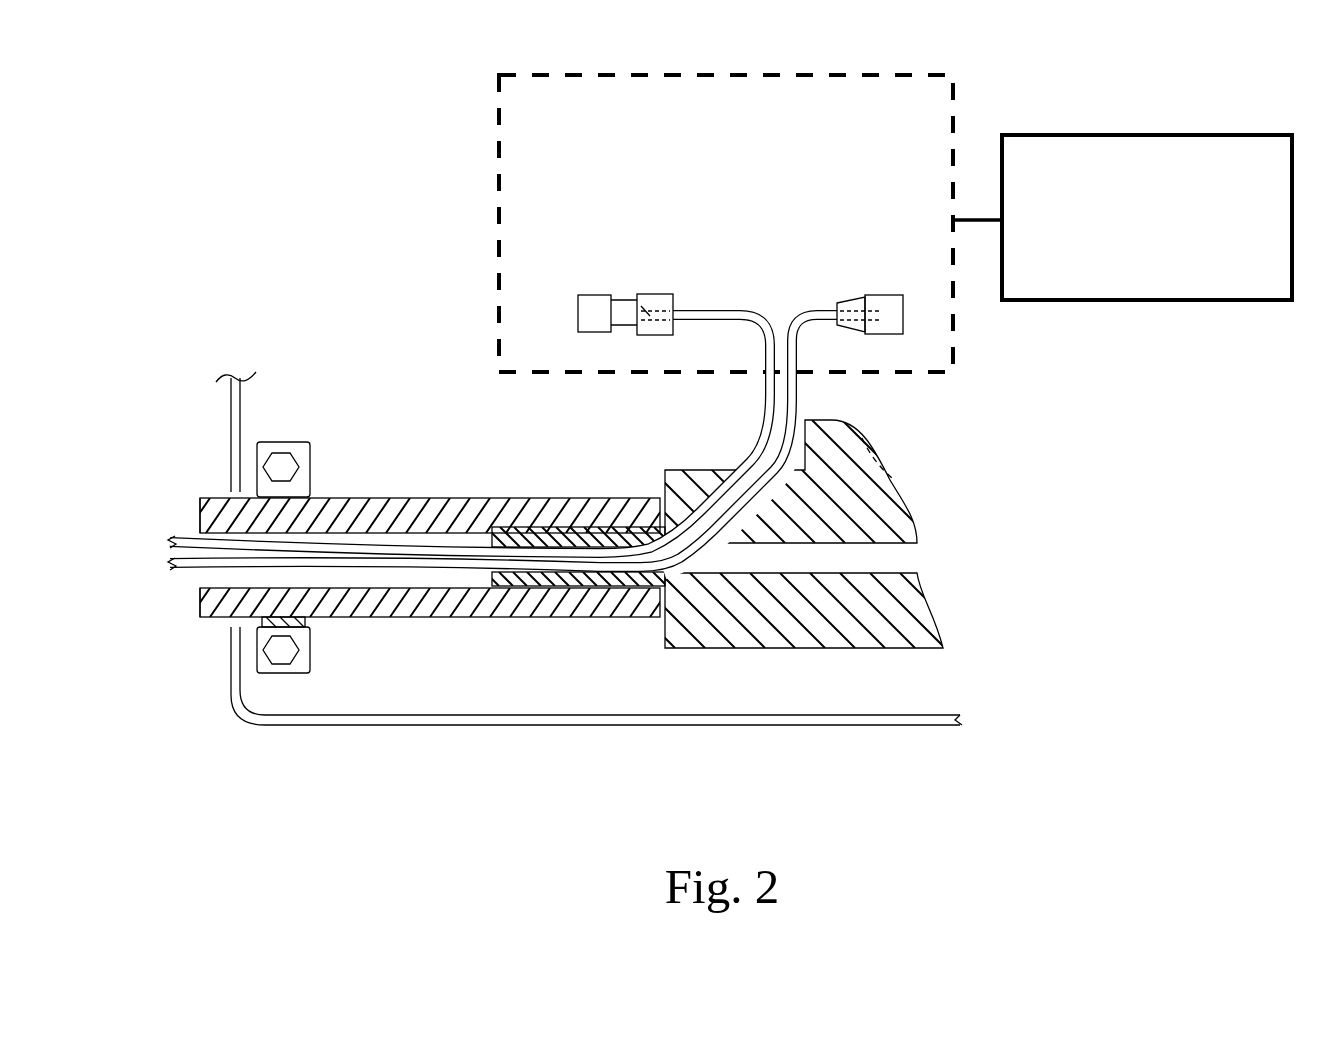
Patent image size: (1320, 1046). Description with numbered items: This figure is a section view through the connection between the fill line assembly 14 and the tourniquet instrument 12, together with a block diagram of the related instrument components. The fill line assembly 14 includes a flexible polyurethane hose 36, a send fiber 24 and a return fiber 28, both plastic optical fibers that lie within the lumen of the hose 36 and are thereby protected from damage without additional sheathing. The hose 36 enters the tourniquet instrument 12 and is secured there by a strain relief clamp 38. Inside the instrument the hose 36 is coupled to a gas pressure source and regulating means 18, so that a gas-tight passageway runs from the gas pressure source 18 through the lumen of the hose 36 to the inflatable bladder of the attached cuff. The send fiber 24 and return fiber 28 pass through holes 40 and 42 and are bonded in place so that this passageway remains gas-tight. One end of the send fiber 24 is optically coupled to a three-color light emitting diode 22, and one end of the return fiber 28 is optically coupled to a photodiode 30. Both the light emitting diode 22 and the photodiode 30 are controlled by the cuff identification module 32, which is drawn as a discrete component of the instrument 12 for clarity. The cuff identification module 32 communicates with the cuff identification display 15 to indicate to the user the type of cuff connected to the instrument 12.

The tourniquet instrument 12 is at (293, 727).
The fill line assembly 14 is at (153, 500).
The cuff identification display 15 is at (1142, 300).
The gas pressure source and regulating means 18 is at (685, 648).
The light emitting diode 22 is at (570, 317).
The send fiber 24 is at (203, 538).
The return fiber 28 is at (200, 576).
The photodiode 30 is at (880, 335).
The cuff identification module 32 is at (492, 185).
The hose 36 is at (432, 617).
The strain relief clamp 38 is at (310, 657).
The hole 40 is at (737, 468).
The hole 42 is at (778, 467).